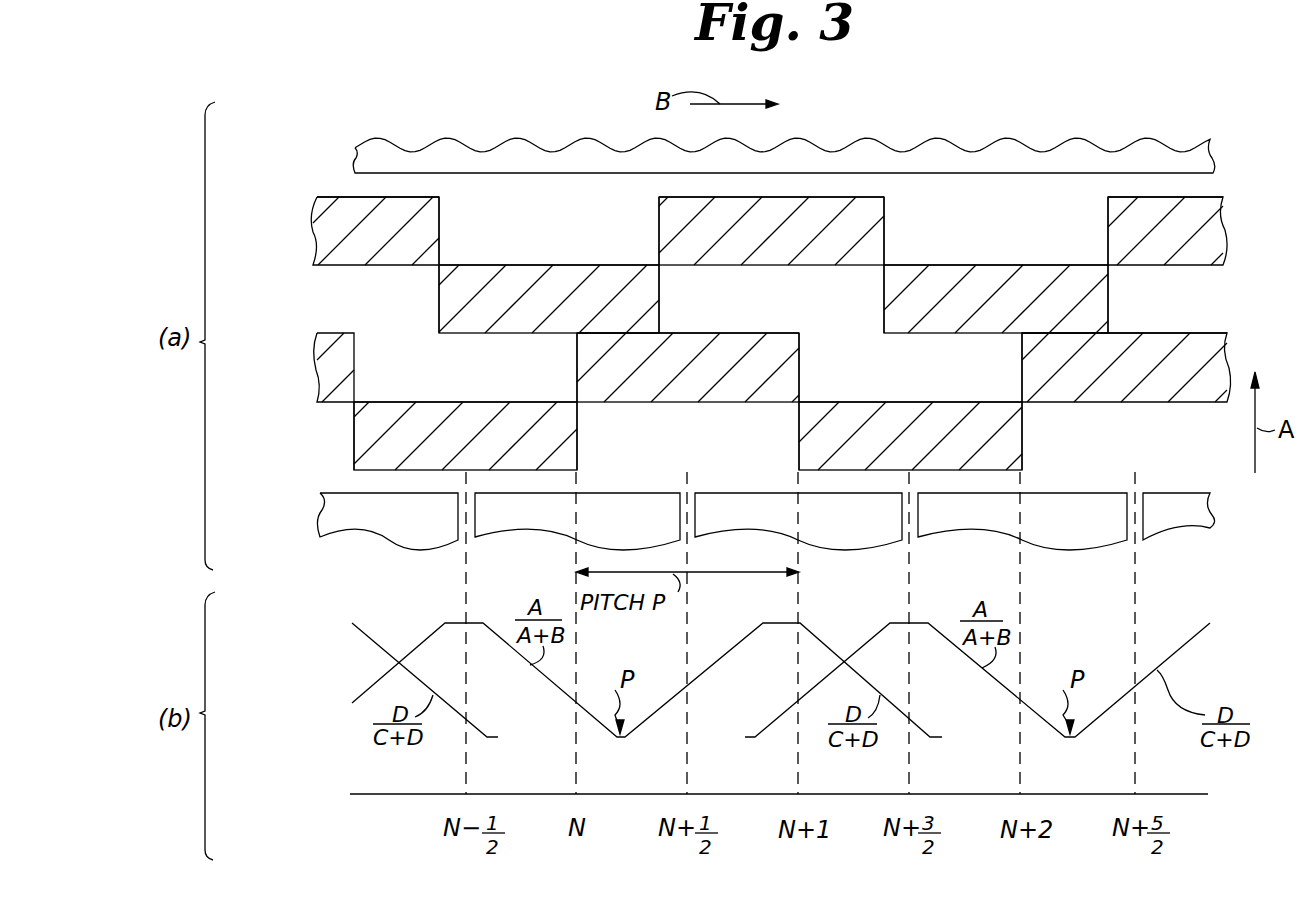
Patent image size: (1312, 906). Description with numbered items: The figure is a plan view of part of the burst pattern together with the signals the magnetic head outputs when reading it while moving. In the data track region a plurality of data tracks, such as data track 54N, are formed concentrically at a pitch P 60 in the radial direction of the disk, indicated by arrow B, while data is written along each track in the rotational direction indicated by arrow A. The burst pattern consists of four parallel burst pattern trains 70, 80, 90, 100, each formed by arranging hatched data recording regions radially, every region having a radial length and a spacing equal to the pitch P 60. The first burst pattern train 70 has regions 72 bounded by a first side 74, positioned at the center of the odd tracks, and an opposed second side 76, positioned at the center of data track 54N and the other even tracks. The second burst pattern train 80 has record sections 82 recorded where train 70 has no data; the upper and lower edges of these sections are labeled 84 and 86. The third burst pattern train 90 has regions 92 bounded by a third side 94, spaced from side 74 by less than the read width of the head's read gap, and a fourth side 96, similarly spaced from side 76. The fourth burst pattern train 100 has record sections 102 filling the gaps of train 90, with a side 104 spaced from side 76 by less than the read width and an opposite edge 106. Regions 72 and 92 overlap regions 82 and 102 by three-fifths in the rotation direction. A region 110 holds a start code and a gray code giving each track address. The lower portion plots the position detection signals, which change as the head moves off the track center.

The region 110 is at (1002, 152).
The burst pattern train 100 is at (296, 240).
The record section 102 is at (433, 212).
The side 104 is at (660, 237).
The trailing side edge of fourth pattern layer 106 is at (442, 248).
The burst pattern train 90 is at (342, 298).
The region 92 is at (663, 283).
The side 94 is at (438, 303).
The side 96 is at (662, 310).
The burst pattern train 80 is at (295, 373).
The record section 82 is at (790, 355).
The trailing side edge of second pattern layer 84 is at (577, 370).
The leading side edge of second pattern layer 86 is at (799, 385).
The burst pattern train 70 is at (302, 428).
The region 72 is at (567, 423).
The side 74 is at (353, 445).
The side 76 is at (577, 460).
The data track 54N is at (493, 527).
The pitch P 60 is at (623, 660).